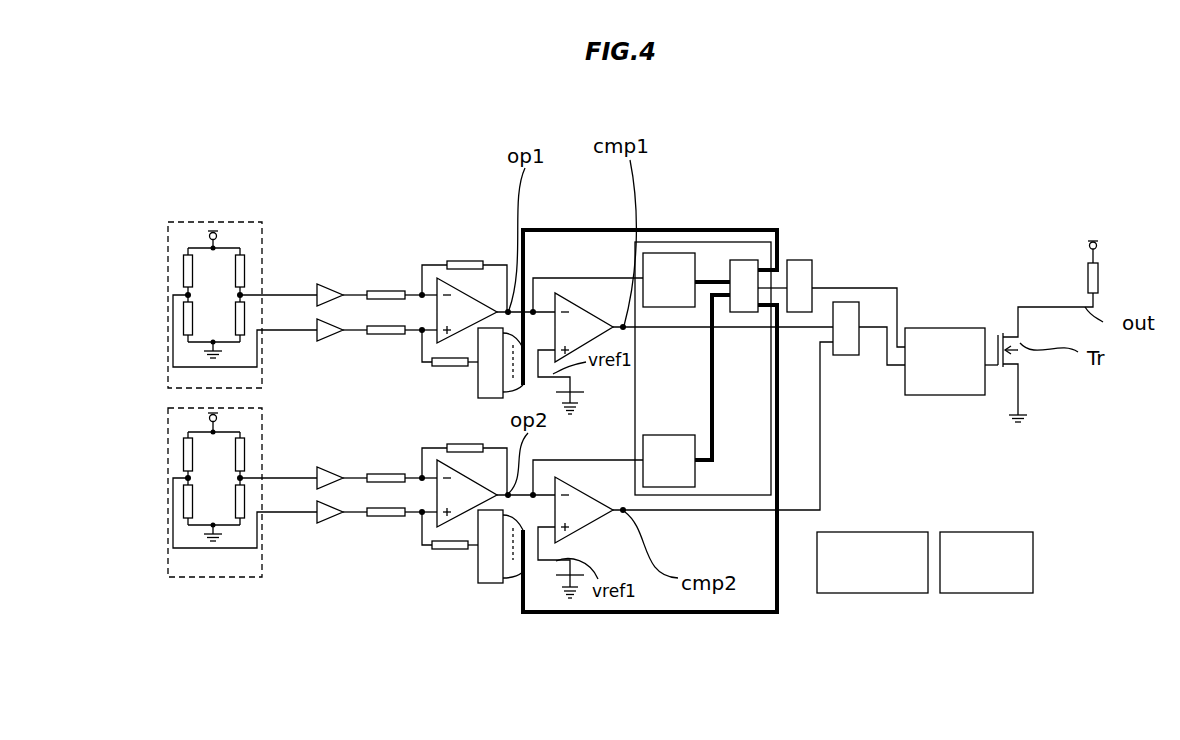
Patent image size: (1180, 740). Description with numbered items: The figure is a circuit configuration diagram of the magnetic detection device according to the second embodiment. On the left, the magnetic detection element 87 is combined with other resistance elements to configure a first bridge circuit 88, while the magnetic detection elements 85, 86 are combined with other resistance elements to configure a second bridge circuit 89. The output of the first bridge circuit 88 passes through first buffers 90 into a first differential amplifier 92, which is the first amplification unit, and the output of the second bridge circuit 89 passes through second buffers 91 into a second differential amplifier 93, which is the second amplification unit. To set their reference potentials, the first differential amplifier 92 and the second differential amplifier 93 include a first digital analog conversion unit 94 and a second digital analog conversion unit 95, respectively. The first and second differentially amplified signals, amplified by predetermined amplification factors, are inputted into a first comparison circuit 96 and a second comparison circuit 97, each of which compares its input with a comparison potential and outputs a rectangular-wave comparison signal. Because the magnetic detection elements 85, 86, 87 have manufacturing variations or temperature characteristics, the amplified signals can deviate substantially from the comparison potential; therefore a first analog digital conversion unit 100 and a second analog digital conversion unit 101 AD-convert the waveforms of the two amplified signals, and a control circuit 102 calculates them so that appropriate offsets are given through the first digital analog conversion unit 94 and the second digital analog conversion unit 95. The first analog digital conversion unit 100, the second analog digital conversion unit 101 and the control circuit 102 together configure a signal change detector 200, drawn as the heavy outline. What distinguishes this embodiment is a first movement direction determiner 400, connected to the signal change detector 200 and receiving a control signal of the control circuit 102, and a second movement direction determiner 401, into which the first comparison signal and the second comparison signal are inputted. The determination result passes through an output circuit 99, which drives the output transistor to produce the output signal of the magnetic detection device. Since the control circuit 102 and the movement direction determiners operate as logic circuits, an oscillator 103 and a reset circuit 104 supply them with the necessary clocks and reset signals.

The magnetic detection element 85 is at (183, 441).
The magnetic detection element 86 is at (183, 496).
The magnetic detection element 87 is at (183, 312).
The first bridge circuit 88 is at (220, 222).
The second bridge circuit 89 is at (210, 578).
The first buffers 90 is at (343, 312).
The second buffers 91 is at (345, 493).
The first differential amplifier 92 is at (439, 278).
The second differential amplifier 93 is at (436, 528).
The first digital analog conversion unit 94 is at (481, 328).
The second digital analog conversion unit 95 is at (503, 583).
The first comparison circuit 96 is at (558, 293).
The second comparison circuit 97 is at (585, 527).
The output circuit 99 is at (947, 328).
The first analog digital conversion unit 100 is at (670, 253).
The second analog digital conversion unit 101 is at (682, 489).
The control circuit 102 is at (745, 259).
The oscillator 103 is at (880, 532).
The reset circuit 104 is at (983, 532).
The signal change detector 200 is at (703, 230).
The first movement direction determiner 400 is at (793, 260).
The second movement direction determiner 401 is at (848, 355).